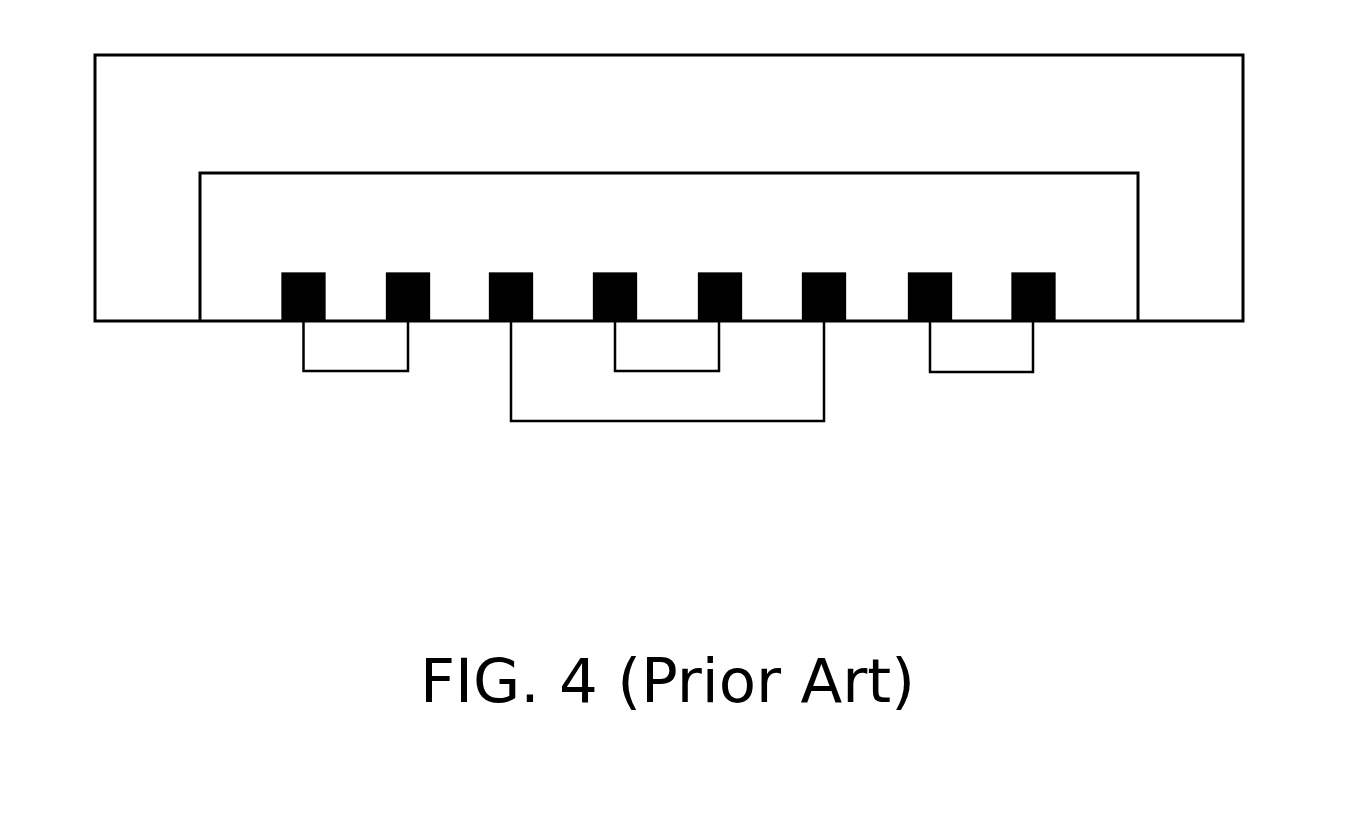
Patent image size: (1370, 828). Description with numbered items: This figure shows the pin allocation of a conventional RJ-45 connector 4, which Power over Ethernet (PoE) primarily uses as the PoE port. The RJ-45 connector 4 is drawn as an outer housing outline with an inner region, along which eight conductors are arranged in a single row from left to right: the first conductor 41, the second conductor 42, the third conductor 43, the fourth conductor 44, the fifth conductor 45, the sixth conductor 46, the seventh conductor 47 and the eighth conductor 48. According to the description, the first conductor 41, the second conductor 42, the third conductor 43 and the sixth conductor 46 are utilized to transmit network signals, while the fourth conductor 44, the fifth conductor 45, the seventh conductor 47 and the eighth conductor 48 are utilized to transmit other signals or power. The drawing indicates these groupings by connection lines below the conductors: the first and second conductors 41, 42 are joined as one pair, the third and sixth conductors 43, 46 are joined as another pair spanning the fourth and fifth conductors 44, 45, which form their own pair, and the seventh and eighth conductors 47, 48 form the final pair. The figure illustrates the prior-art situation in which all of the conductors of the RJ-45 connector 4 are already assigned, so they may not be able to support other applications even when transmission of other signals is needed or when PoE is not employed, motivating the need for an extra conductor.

The RJ-45 connector 4 is at (1267, 203).
The first conductor 41 is at (345, 304).
The second conductor 42 is at (408, 278).
The third conductor 43 is at (657, 329).
The fourth conductor 44 is at (657, 304).
The fifth conductor 45 is at (720, 278).
The sixth conductor 46 is at (824, 278).
The seventh conductor 47 is at (971, 304).
The eighth conductor 48 is at (1033, 278).